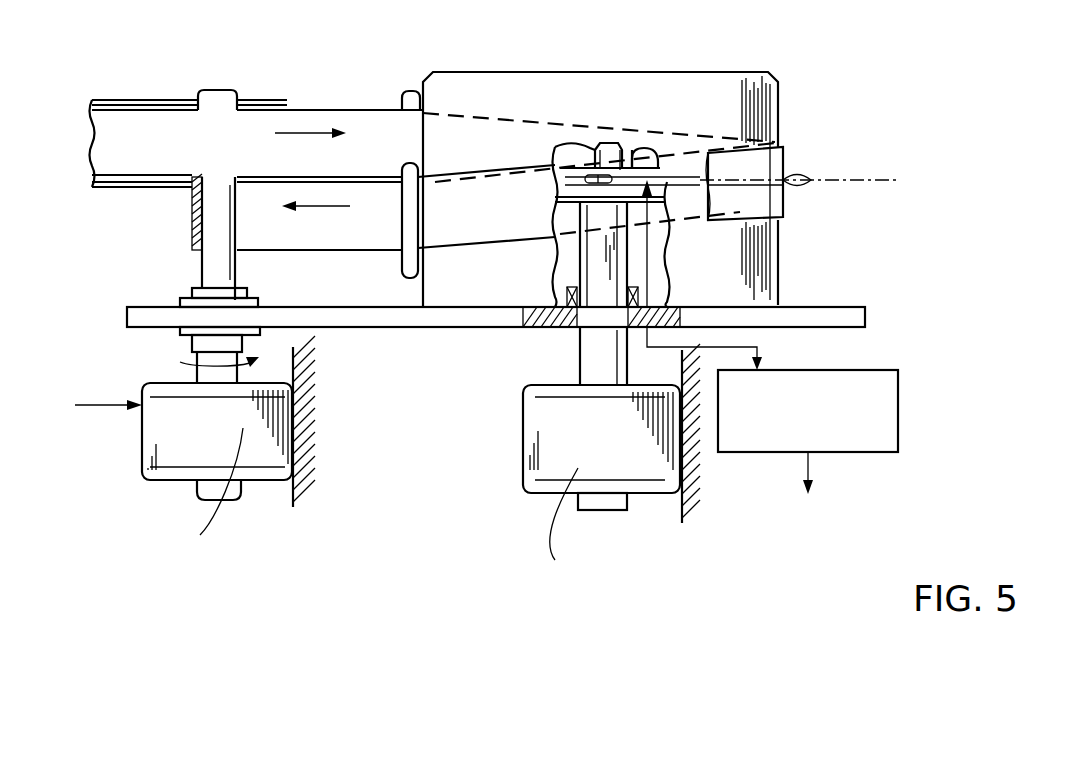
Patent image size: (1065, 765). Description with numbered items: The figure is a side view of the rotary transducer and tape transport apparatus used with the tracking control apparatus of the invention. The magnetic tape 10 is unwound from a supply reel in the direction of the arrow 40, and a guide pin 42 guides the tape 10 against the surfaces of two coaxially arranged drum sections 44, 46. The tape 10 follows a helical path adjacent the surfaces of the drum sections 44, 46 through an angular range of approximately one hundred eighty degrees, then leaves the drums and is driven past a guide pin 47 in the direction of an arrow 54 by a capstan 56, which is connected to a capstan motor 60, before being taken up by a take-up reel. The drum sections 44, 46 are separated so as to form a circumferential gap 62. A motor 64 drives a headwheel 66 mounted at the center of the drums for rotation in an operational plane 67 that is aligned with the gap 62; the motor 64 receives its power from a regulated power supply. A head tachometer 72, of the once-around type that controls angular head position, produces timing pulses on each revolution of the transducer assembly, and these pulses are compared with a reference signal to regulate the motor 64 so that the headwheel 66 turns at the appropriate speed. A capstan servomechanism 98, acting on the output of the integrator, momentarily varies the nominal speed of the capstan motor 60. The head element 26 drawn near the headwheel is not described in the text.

The magnetic tape 10 is at (92, 100).
The arrow 40 is at (305, 130).
The guide pin 42 is at (408, 91).
The drum section 44 is at (495, 118).
The guide pin 47 is at (402, 263).
The arrow 54 is at (354, 206).
The capstan 56 is at (217, 210).
The drum section 46 is at (477, 285).
The circumferential gap 62 is at (683, 183).
The headwheel 66 is at (630, 163).
The head tip 26 is at (585, 171).
The operational plane 67 is at (893, 182).
The head tachometer 72 is at (883, 453).
The capstan servomechanism 98 is at (108, 403).
The capstan motor 60 is at (142, 428).
The motor 64 is at (527, 441).